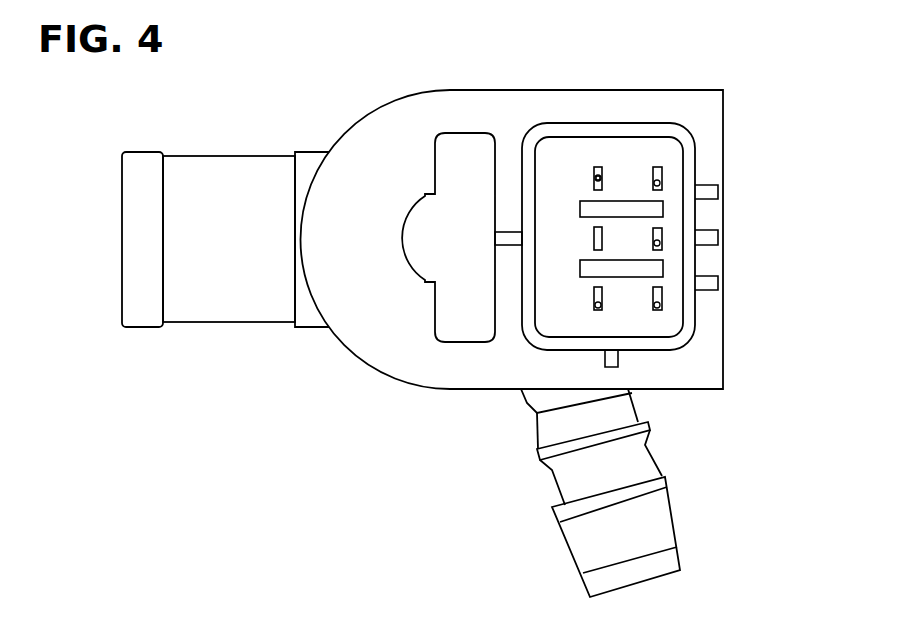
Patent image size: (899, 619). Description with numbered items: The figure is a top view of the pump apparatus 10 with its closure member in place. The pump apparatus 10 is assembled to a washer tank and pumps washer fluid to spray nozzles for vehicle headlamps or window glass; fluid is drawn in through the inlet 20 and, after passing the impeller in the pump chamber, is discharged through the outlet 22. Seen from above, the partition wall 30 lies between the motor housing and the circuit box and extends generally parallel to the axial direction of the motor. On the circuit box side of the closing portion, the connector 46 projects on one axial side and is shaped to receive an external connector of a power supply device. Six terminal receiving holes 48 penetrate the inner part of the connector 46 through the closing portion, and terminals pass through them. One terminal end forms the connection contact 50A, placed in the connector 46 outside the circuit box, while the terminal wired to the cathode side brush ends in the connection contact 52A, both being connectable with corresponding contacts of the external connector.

The pump apparatus 10 is at (333, 78).
The inlet 20 is at (228, 325).
The outlet 22 is at (673, 509).
The partition wall 30 is at (505, 90).
The connector 46 is at (602, 167).
The terminal receiving holes 48 is at (592, 236).
The connection contact 50A is at (592, 242).
The connection contact 52A is at (598, 176).